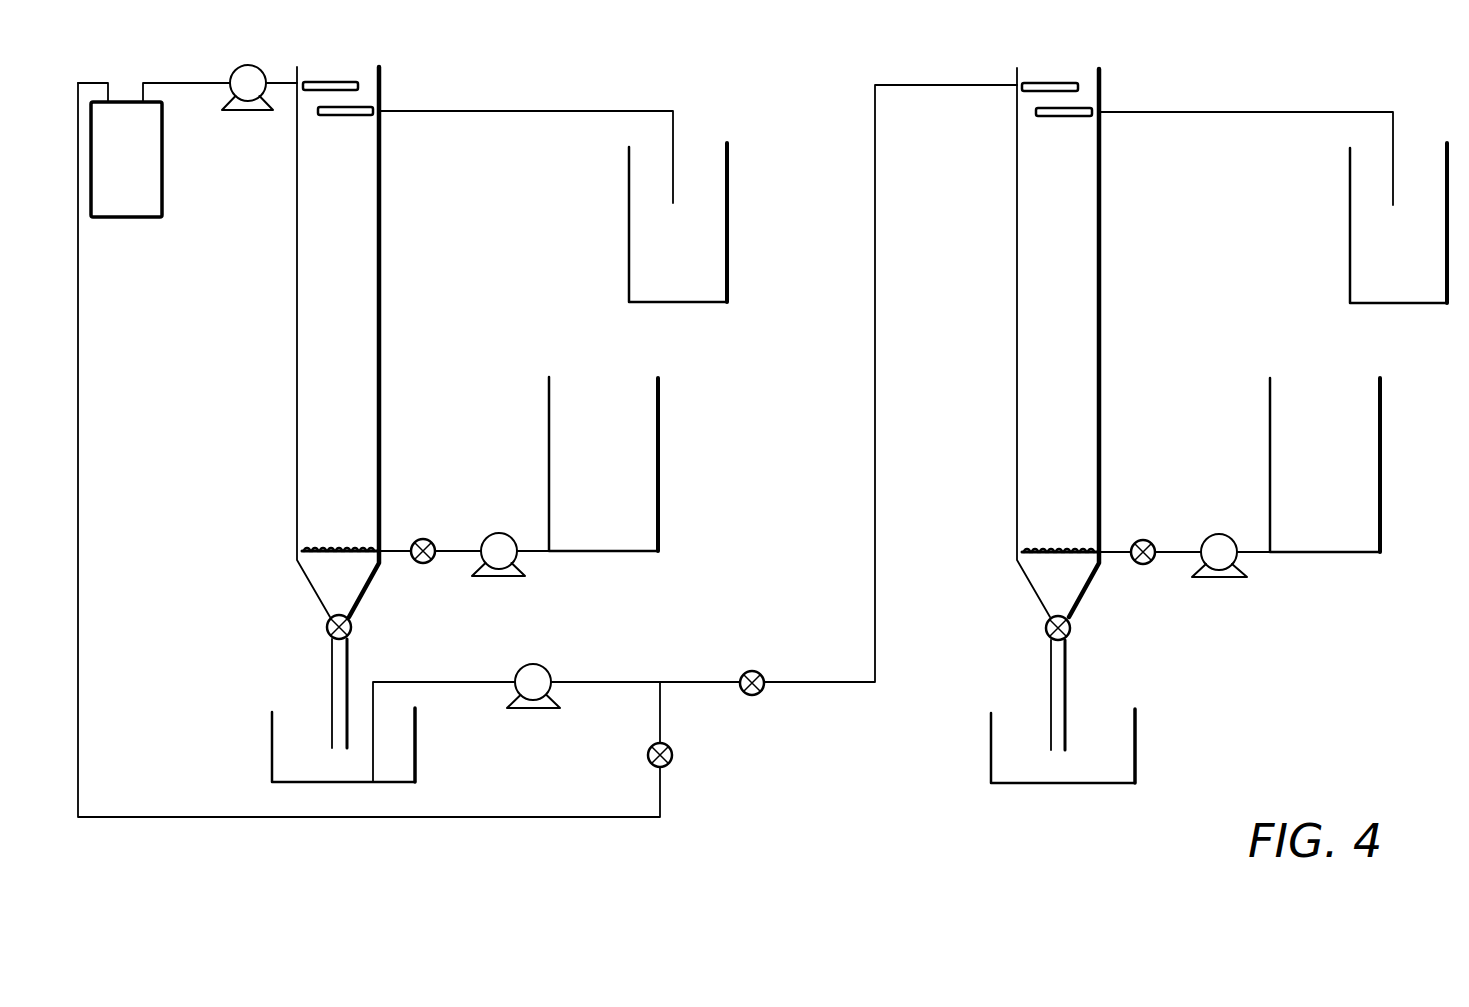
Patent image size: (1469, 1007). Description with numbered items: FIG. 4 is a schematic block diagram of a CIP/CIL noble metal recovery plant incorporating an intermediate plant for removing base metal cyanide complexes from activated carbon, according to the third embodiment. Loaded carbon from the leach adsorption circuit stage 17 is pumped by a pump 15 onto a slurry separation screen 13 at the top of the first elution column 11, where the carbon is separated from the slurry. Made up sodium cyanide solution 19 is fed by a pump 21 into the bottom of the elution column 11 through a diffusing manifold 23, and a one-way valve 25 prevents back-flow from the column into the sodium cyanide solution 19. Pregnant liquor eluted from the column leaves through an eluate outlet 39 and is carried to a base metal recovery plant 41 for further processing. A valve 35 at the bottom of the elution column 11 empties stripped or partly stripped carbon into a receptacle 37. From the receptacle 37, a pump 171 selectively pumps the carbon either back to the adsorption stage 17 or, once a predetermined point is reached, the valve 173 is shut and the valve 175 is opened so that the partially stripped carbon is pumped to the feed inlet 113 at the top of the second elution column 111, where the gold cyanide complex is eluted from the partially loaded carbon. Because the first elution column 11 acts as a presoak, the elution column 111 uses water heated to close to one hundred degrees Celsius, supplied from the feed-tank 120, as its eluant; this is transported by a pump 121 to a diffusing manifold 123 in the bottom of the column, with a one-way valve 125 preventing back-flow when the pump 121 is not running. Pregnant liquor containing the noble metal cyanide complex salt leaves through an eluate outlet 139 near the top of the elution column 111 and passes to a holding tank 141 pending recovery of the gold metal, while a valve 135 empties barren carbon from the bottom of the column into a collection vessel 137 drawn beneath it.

The elution column 11 is at (297, 238).
The slurry separation screen 13 is at (345, 82).
The pump 15 is at (250, 65).
The leach adsorption circuit stage 17 is at (162, 160).
The made up sodium cyanide solution 19 is at (658, 486).
The pump 21 is at (499, 533).
The diffusing manifold 23 is at (305, 548).
The one-way valve 25 is at (423, 539).
The valve 35 is at (351, 625).
The receptacle 37 is at (272, 752).
The eluate outlet 39 is at (371, 110).
The base metal recovery plant 41 is at (629, 230).
The elution column 111 is at (1017, 432).
The feed inlet 113 is at (1068, 83).
The feed-tank 120 is at (1380, 487).
The pump 121 is at (1219, 534).
The diffusing manifold 123 is at (1025, 549).
The one-way valve 125 is at (1143, 540).
The valve 135 is at (1070, 626).
The second collection tank 137 is at (991, 752).
The eluate outlet 139 is at (1092, 111).
The holding tank 141 is at (1350, 232).
The pump 171 is at (533, 664).
The valve 173 is at (672, 755).
The valve 175 is at (752, 671).